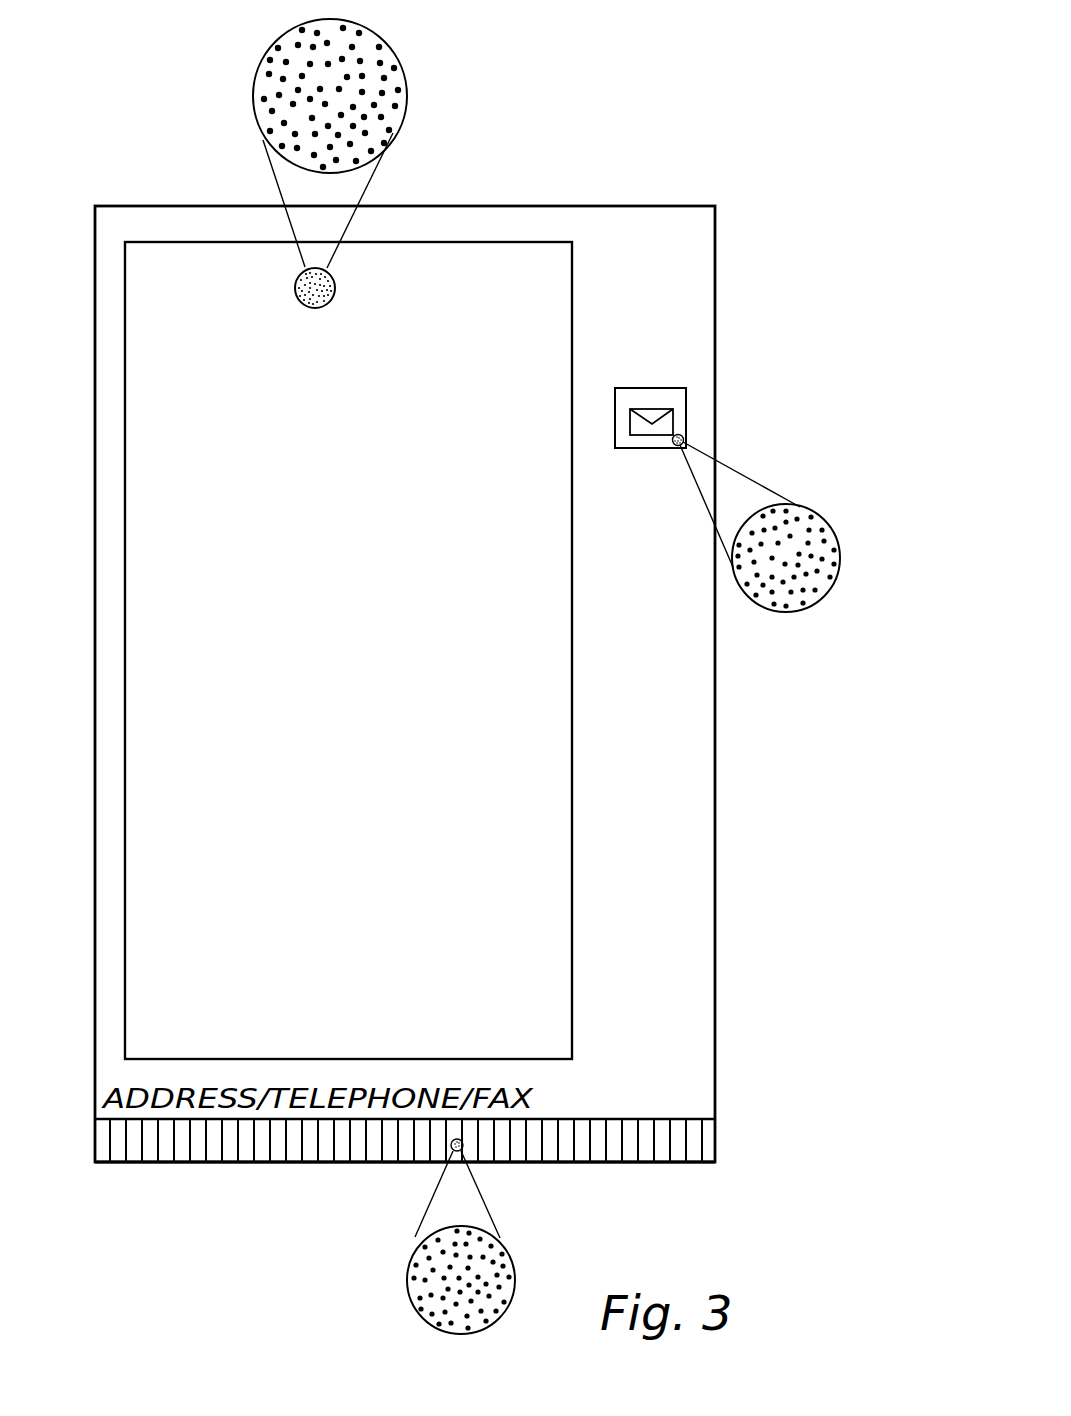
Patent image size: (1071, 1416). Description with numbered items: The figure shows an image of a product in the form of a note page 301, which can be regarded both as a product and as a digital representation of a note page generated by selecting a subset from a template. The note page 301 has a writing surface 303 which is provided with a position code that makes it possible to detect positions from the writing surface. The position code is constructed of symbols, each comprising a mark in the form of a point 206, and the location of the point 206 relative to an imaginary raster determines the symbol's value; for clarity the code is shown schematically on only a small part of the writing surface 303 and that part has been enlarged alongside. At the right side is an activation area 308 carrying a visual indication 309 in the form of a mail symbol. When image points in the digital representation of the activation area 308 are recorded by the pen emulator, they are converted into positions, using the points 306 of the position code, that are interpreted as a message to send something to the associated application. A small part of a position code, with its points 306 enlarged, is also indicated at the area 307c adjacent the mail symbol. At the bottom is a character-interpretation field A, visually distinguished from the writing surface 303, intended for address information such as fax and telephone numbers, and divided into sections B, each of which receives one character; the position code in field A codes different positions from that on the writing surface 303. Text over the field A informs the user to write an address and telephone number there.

The note page 301 is at (511, 204).
The writing surface 303 is at (348, 650).
The points in the position code 306 is at (377, 50).
The activation area 308 is at (647, 395).
The visual indication 309 is at (658, 408).
The marker dot cluster 307c is at (682, 415).
The point 206 is at (747, 563).
The character-interpretation field A is at (102, 1138).
The sections B is at (317, 1155).